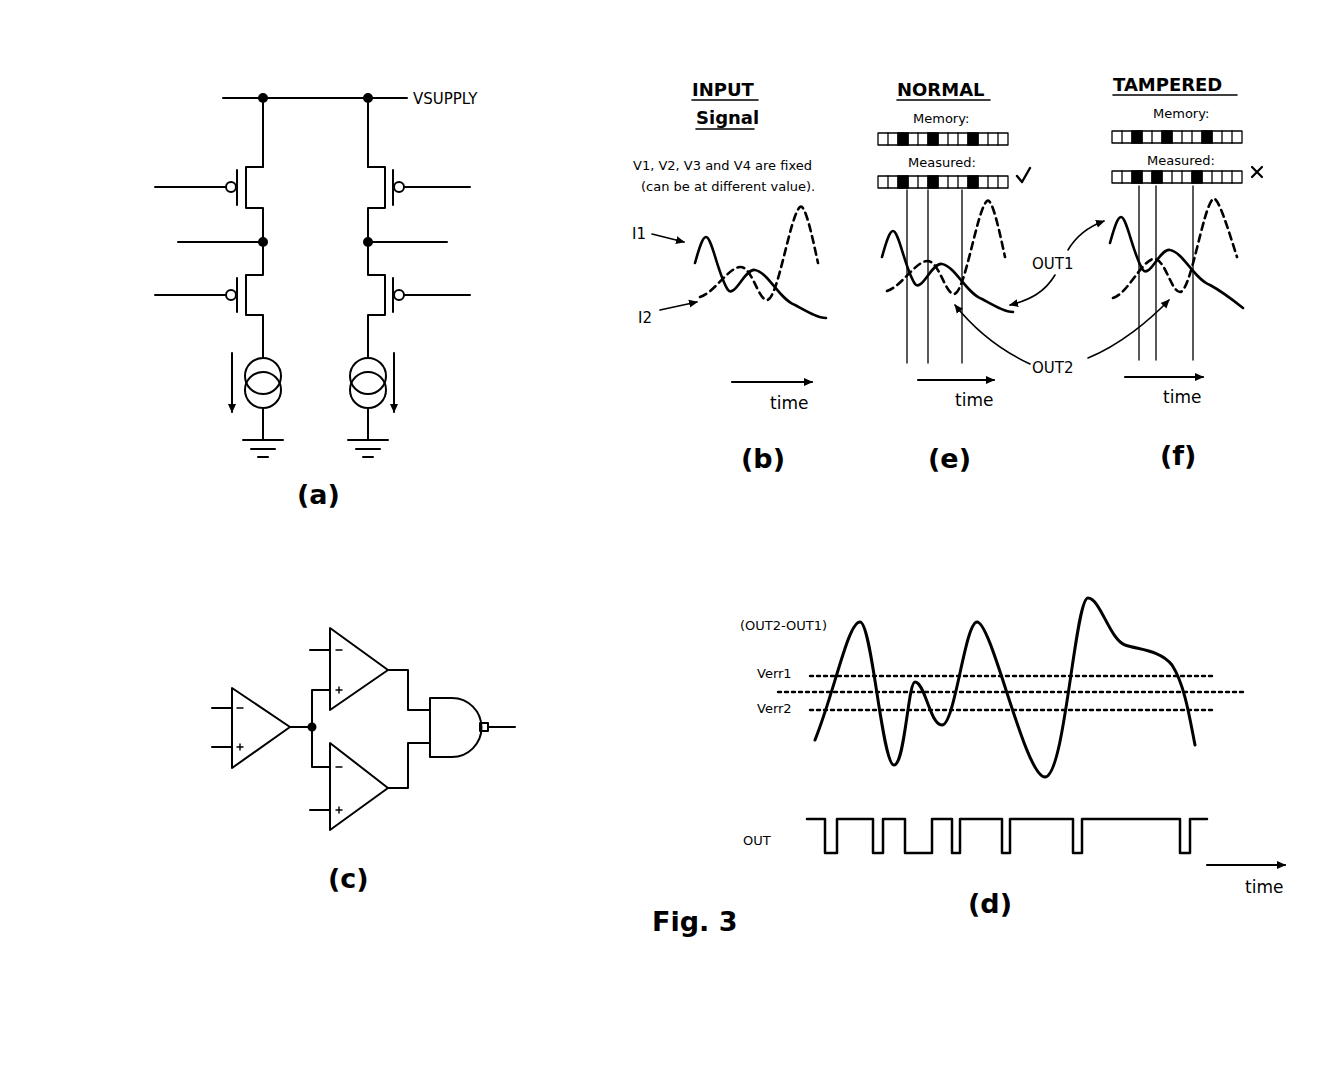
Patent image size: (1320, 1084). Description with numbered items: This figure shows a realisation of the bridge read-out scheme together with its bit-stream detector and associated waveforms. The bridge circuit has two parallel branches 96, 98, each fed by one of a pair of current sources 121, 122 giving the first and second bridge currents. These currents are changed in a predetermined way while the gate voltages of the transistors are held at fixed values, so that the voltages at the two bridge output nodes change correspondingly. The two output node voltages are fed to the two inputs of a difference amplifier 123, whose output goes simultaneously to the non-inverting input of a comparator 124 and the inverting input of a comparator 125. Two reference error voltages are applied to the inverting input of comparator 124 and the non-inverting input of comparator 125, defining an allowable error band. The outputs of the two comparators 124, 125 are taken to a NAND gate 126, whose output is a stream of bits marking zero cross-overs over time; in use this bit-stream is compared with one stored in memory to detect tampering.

The parallel branch 96 is at (248, 118).
The parallel branch 98 is at (380, 128).
The current source 121 is at (280, 392).
The current source 122 is at (384, 398).
The difference amplifier 123 is at (240, 668).
The comparator 124 is at (368, 648).
The comparator 125 is at (363, 808).
The NAND gate 126 is at (464, 758).